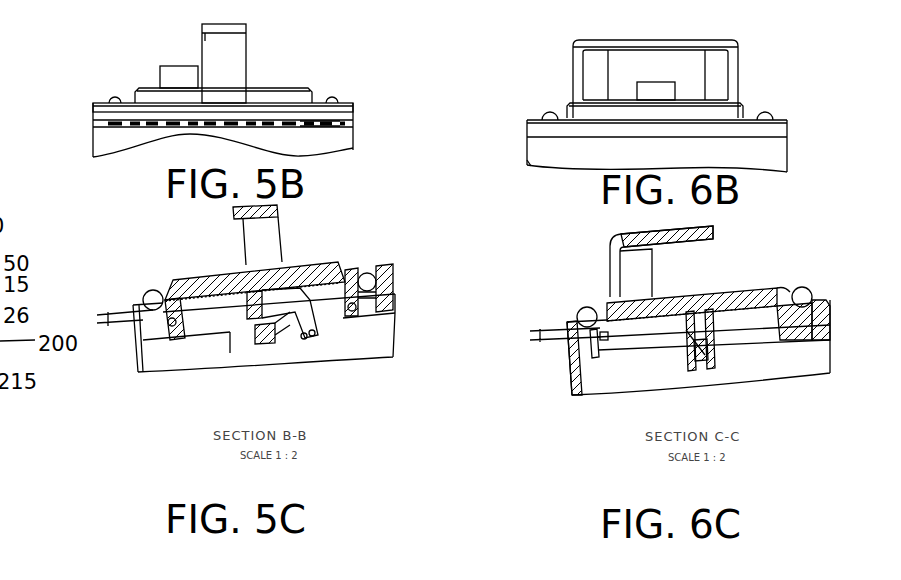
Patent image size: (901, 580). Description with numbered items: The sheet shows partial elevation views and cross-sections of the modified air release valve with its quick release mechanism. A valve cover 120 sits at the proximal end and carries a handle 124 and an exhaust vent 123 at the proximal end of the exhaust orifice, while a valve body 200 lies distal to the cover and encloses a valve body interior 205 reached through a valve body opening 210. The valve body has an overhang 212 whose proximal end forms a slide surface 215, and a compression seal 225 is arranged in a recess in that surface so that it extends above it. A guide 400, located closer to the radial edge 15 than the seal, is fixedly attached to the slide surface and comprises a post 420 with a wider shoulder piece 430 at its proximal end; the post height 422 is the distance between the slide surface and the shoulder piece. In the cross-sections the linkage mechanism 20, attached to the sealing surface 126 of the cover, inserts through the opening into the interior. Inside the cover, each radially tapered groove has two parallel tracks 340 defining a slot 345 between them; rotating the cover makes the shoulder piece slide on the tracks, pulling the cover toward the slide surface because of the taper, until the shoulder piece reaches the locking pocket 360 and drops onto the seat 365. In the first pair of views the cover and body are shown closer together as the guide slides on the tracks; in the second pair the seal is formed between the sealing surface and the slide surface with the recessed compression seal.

In FIG. 5B, the radial edge 15 is at (93, 115).
In FIG. 5C, the radial edge 15 is at (136, 357).
In FIG. 5C, the linkage mechanism 20 is at (290, 335).
In FIG. 6C, the linkage mechanism 20 is at (690, 367).
In FIG. 5B, the valve cover 120 is at (290, 80).
In FIG. 6B, the valve cover 120 is at (742, 120).
In FIG. 5C, the valve cover 120 is at (165, 280).
In FIG. 6C, the valve cover 120 is at (560, 322).
In FIG. 5B, the exhaust vent 123 is at (163, 78).
In FIG. 6B, the exhaust vent 123 is at (665, 90).
In FIG. 5B, the handle 124 is at (240, 53).
In FIG. 6B, the handle 124 is at (593, 43).
In FIG. 5C, the handle 124 is at (257, 235).
In FIG. 6C, the handle 124 is at (661, 261).
In FIG. 6B, the sealing surface 126 is at (552, 136).
In FIG. 5B, the valve body 200 is at (350, 145).
In FIG. 6B, the valve body 200 is at (768, 162).
In FIG. 5C, the valve body 200 is at (400, 330).
In FIG. 6C, the valve body 200 is at (560, 385).
In FIG. 5C, the valve body interior 205 is at (188, 350).
In FIG. 6C, the valve body interior 205 is at (778, 366).
In FIG. 5C, the valve body opening 210 is at (232, 328).
In FIG. 6C, the overhang 212 is at (613, 350).
In FIG. 6B, the slide surface 215 is at (745, 137).
In FIG. 5B, the compression seal 225 is at (165, 125).
In FIG. 5C, the compression seal 225 is at (353, 311).
In FIG. 6C, the compression seal 225 is at (778, 335).
In FIG. 5C, the parallel tracks 340 is at (355, 268).
In FIG. 5C, the slot 345 is at (393, 292).
In FIG. 6C, the locking pocket 360 is at (810, 292).
In FIG. 6C, the seat 365 is at (598, 302).
In FIG. 5C, the guide 400 is at (150, 299).
In FIG. 5B, the post 420 is at (337, 124).
In FIG. 5C, the post height 422 is at (108, 316).
In FIG. 6C, the post height 422 is at (546, 331).
In FIG. 5B, the shoulder piece 430 is at (330, 98).
In FIG. 6B, the shoulder piece 430 is at (547, 112).
In FIG. 5C, the shoulder piece 430 is at (366, 274).
In FIG. 6C, the shoulder piece 430 is at (792, 290).